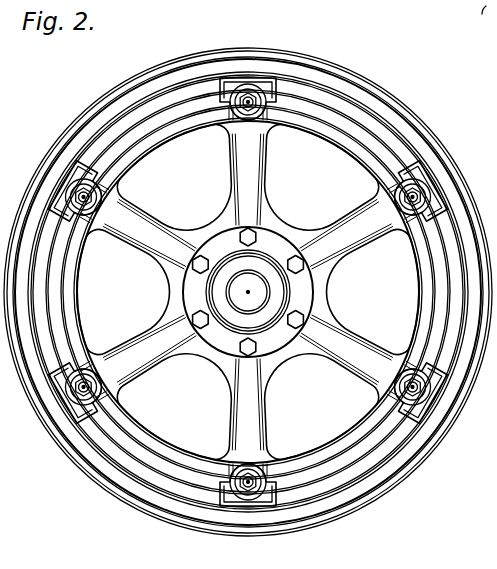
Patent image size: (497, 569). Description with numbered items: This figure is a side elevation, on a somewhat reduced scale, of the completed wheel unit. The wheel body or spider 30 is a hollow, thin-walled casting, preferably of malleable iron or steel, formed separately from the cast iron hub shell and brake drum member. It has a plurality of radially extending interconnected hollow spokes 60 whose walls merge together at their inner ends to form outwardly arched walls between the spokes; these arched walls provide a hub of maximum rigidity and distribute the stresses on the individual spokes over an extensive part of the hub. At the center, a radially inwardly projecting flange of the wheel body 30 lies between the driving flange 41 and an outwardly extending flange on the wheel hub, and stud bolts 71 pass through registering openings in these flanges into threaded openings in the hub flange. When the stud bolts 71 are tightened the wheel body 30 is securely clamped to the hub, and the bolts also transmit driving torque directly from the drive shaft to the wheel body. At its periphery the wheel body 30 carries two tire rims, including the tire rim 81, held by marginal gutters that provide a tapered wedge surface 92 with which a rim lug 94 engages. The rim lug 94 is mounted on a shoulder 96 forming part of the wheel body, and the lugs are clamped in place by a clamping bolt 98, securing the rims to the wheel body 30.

The wheel body or spider 30 is at (229, 158).
The driving flange 41 is at (304, 291).
The hollow spokes 60 is at (347, 220).
The stud bolts 71 is at (249, 230).
The tire rim 81 is at (190, 63).
The tapered wedge surface 92 is at (255, 78).
The rim lug 94 is at (237, 82).
The shoulder 96 is at (258, 100).
The clamping bolt 98 is at (260, 97).